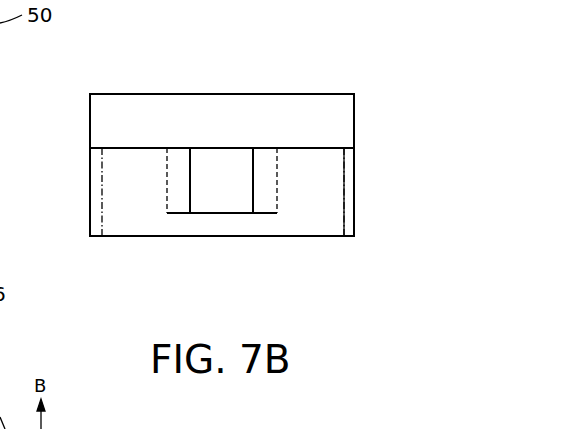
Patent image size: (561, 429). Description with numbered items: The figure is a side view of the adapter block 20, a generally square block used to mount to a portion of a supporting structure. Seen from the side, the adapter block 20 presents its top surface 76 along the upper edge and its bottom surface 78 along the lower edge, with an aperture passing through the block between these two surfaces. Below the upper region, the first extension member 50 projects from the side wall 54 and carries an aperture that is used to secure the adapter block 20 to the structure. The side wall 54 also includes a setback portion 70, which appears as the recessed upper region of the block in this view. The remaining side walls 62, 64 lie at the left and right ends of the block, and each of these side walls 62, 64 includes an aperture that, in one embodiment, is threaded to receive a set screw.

The adapter block 20 is at (270, 80).
The first extension member 50 is at (215, 190).
The side wall 54 is at (310, 203).
The side wall 62 is at (90, 154).
The side wall 64 is at (356, 188).
The setback portion 70 is at (324, 127).
The top surface 76 is at (143, 94).
The bottom surface 78 is at (125, 239).